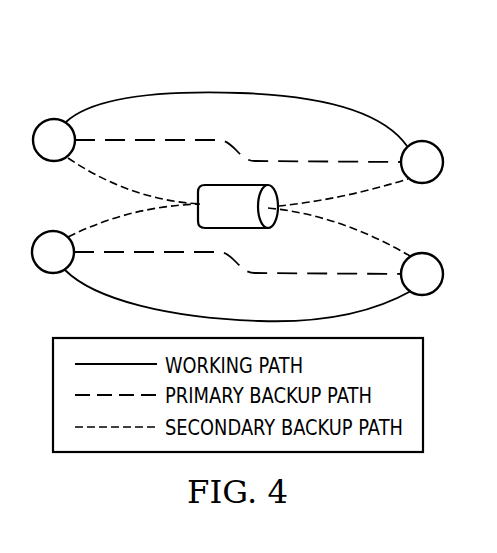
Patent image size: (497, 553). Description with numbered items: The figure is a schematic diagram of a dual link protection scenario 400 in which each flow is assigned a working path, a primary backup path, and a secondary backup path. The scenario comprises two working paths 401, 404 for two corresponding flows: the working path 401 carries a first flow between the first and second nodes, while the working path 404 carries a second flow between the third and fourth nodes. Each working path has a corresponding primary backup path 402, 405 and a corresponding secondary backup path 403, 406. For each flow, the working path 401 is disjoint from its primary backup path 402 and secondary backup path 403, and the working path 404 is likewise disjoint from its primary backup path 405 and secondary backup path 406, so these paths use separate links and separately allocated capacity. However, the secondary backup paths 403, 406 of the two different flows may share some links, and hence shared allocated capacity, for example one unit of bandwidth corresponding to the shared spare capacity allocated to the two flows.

The dual link protection scenario 400 is at (318, 77).
The working path 401 is at (212, 92).
The primary backup path 402 is at (294, 159).
The secondary backup path 403 is at (134, 190).
The working path 404 is at (213, 317).
The primary backup path 405 is at (295, 270).
The secondary backup path 406 is at (88, 222).